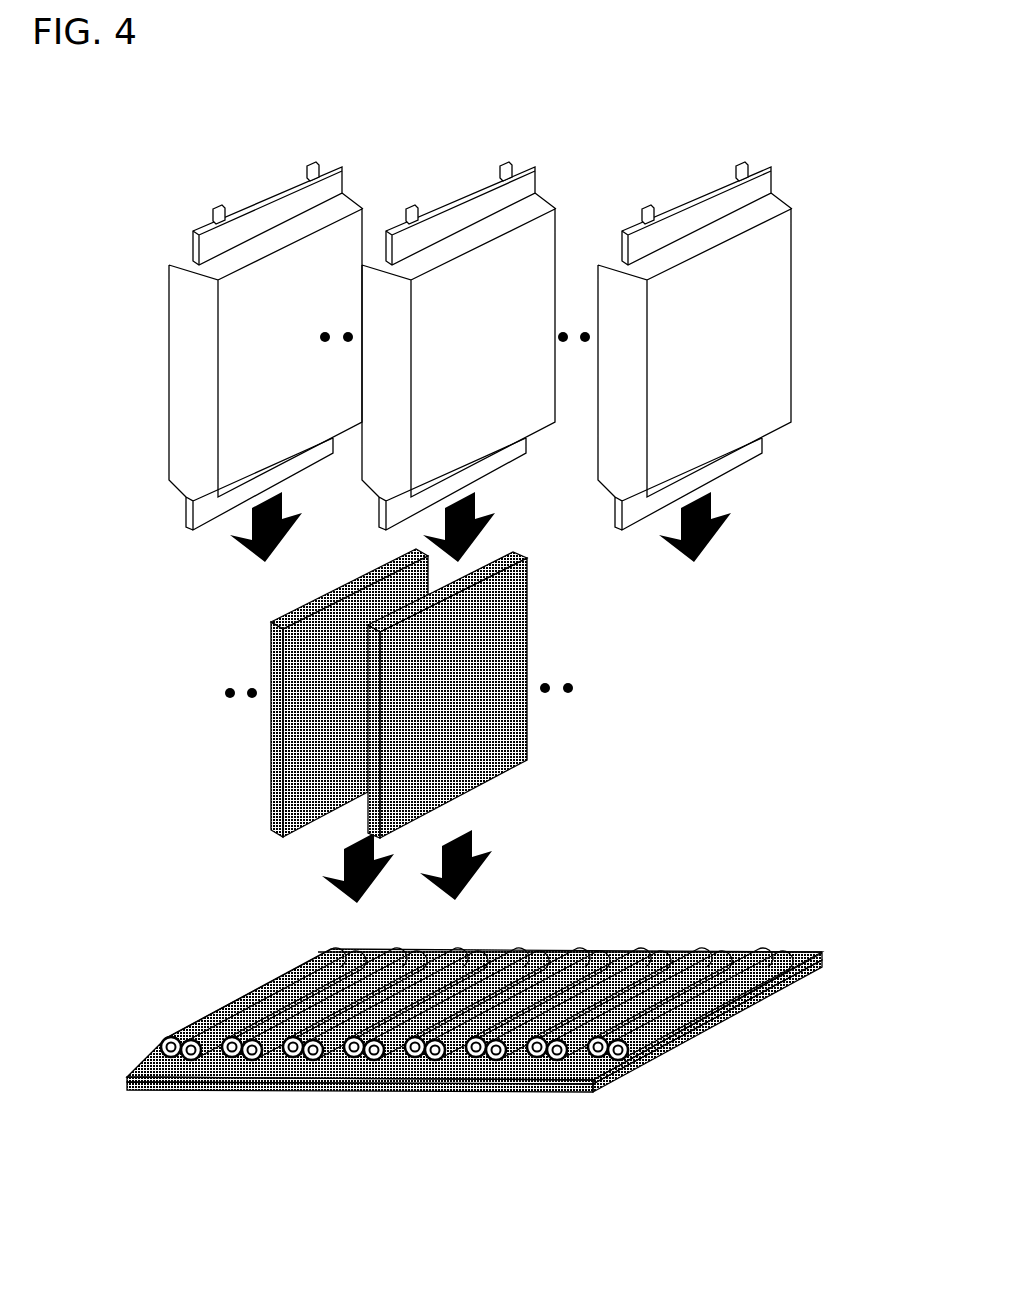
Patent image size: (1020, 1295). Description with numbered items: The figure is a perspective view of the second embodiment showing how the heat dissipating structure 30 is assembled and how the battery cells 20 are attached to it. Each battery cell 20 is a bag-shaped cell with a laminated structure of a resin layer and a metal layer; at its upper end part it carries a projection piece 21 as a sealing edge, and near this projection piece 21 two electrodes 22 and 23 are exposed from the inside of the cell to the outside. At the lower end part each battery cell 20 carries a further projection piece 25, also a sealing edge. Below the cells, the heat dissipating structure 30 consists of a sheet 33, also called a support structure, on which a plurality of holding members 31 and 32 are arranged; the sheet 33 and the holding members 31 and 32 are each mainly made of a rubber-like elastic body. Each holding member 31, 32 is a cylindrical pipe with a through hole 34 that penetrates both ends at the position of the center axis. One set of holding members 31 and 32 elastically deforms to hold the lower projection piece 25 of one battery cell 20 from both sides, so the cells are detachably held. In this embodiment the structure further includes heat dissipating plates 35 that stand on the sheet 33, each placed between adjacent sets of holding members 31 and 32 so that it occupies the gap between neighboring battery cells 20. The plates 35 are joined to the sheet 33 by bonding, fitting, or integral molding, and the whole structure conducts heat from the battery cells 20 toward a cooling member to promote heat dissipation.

The battery cell 20 is at (488, 312).
The projection piece 21 is at (273, 192).
The electrode 22 is at (215, 208).
The electrode 23 is at (310, 165).
The projection piece 25 is at (186, 508).
The heat dissipating structure 30 is at (465, 1031).
The holding member 31 is at (138, 1092).
The holding member 32 is at (166, 1091).
The sheet 33 is at (793, 952).
The through hole 34 is at (392, 1060).
The heat dissipating plate 35 is at (513, 633).